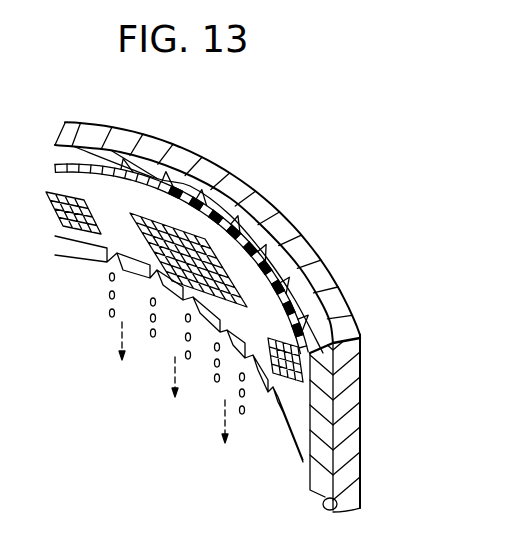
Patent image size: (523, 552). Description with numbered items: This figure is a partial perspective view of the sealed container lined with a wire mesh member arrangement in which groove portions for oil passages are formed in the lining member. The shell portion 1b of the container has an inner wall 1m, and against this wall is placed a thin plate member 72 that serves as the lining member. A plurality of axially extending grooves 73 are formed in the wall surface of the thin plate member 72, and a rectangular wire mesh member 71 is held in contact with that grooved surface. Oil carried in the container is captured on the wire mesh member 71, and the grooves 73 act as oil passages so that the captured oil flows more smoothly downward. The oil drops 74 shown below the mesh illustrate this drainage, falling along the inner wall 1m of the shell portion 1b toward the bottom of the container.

The shell portion 1b is at (243, 197).
The inner wall 1m is at (363, 501).
The wire mesh member 71 is at (105, 236).
The thin plate member 72 is at (207, 206).
The grooves 73 is at (275, 253).
The oil drops 74 is at (247, 412).